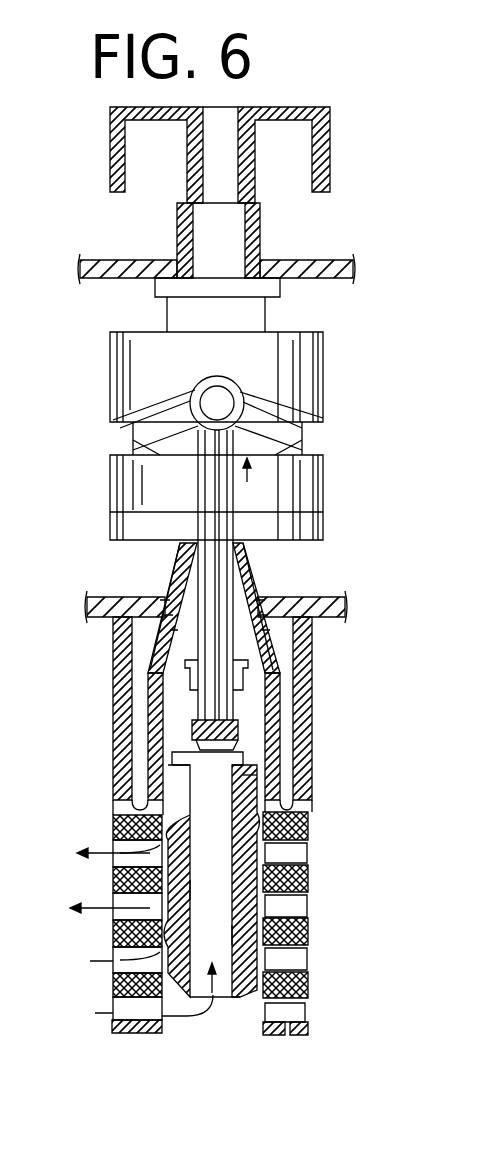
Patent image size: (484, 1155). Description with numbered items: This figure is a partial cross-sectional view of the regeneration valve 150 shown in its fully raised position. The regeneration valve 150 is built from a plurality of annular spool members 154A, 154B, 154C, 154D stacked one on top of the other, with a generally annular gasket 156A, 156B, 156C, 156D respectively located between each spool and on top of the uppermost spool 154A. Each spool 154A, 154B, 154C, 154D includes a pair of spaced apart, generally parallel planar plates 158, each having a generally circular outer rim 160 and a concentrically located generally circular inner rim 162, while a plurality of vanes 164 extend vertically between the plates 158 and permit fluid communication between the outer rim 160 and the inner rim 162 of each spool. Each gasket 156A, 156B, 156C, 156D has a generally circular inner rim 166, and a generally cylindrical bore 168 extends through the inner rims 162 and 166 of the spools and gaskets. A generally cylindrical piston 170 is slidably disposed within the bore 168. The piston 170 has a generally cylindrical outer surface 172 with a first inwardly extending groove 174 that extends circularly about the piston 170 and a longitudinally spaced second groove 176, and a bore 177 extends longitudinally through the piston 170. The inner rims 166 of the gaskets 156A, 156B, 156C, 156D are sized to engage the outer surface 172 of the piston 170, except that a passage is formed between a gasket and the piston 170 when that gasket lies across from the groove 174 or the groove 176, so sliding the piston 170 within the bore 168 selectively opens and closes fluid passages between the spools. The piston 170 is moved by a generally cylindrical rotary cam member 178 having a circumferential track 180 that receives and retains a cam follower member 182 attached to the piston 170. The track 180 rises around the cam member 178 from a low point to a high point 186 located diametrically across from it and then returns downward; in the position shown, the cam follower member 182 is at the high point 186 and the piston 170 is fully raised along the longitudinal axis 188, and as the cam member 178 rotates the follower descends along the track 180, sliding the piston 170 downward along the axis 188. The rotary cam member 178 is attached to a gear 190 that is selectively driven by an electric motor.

The regeneration valve 150 is at (352, 543).
The annular spool member 154A is at (308, 856).
The annular spool member 154B is at (308, 902).
The annular spool member 154C is at (308, 957).
The annular spool member 154D is at (308, 1014).
The annular gasket 156A is at (310, 826).
The annular gasket 156B is at (310, 877).
The annular gasket 156C is at (310, 932).
The annular gasket 156D is at (310, 987).
The planar plate 158 is at (113, 992).
The outer rim 160 is at (113, 1026).
The inner rim 162 is at (262, 1027).
The vane 164 is at (297, 1034).
The inner rim 166 is at (253, 996).
The cylindrical bore 168 is at (244, 893).
The piston 170 is at (253, 781).
The outer surface 172 is at (252, 809).
The first groove 174 is at (308, 811).
The second groove 176 is at (255, 936).
The bore 177 is at (227, 862).
The rotary cam member 178 is at (330, 356).
The track 180 is at (313, 450).
The cam follower member 182 is at (217, 376).
The high point 186 is at (228, 432).
The longitudinal axis 188 is at (218, 571).
The gear 190 is at (282, 294).